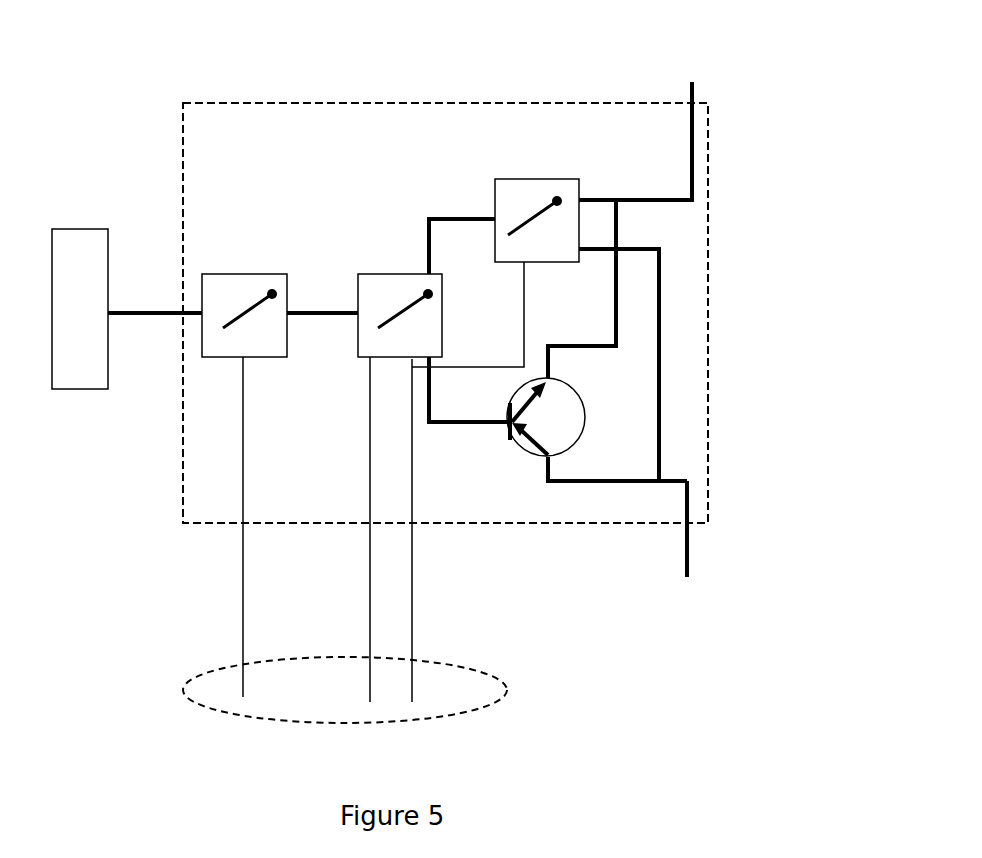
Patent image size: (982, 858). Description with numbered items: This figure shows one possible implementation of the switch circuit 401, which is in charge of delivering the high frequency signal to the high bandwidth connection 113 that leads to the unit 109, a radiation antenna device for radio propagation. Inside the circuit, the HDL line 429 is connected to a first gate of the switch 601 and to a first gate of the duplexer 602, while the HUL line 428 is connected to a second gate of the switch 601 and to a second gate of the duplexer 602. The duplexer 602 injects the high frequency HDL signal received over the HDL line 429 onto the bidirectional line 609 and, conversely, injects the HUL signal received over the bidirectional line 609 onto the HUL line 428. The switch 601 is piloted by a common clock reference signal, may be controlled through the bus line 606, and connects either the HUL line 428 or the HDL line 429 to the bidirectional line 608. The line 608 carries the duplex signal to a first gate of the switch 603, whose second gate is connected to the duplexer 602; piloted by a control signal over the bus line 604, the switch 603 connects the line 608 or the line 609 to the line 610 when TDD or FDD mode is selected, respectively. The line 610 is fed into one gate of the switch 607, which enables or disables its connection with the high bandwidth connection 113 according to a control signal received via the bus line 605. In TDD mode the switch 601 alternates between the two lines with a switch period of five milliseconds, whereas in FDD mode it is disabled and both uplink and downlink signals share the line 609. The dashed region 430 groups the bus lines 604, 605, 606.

The unit for interfacing with a high bandwidth connection 109 is at (97, 207).
The high bandwidth connection 113 is at (133, 300).
The switch circuit 401 is at (366, 126).
The HUL line 428 is at (693, 92).
The HDL line 429 is at (693, 545).
The connector 430 is at (507, 688).
The switch 601 is at (523, 178).
The duplexer 602 is at (585, 417).
The switch 603 is at (401, 250).
The bus line 604 is at (369, 573).
The bus line 605 is at (240, 600).
The bus line 606 is at (412, 592).
The switch 607 is at (232, 273).
The line 608 is at (432, 216).
The bidirectional line 609 is at (478, 423).
The line 610 is at (337, 317).